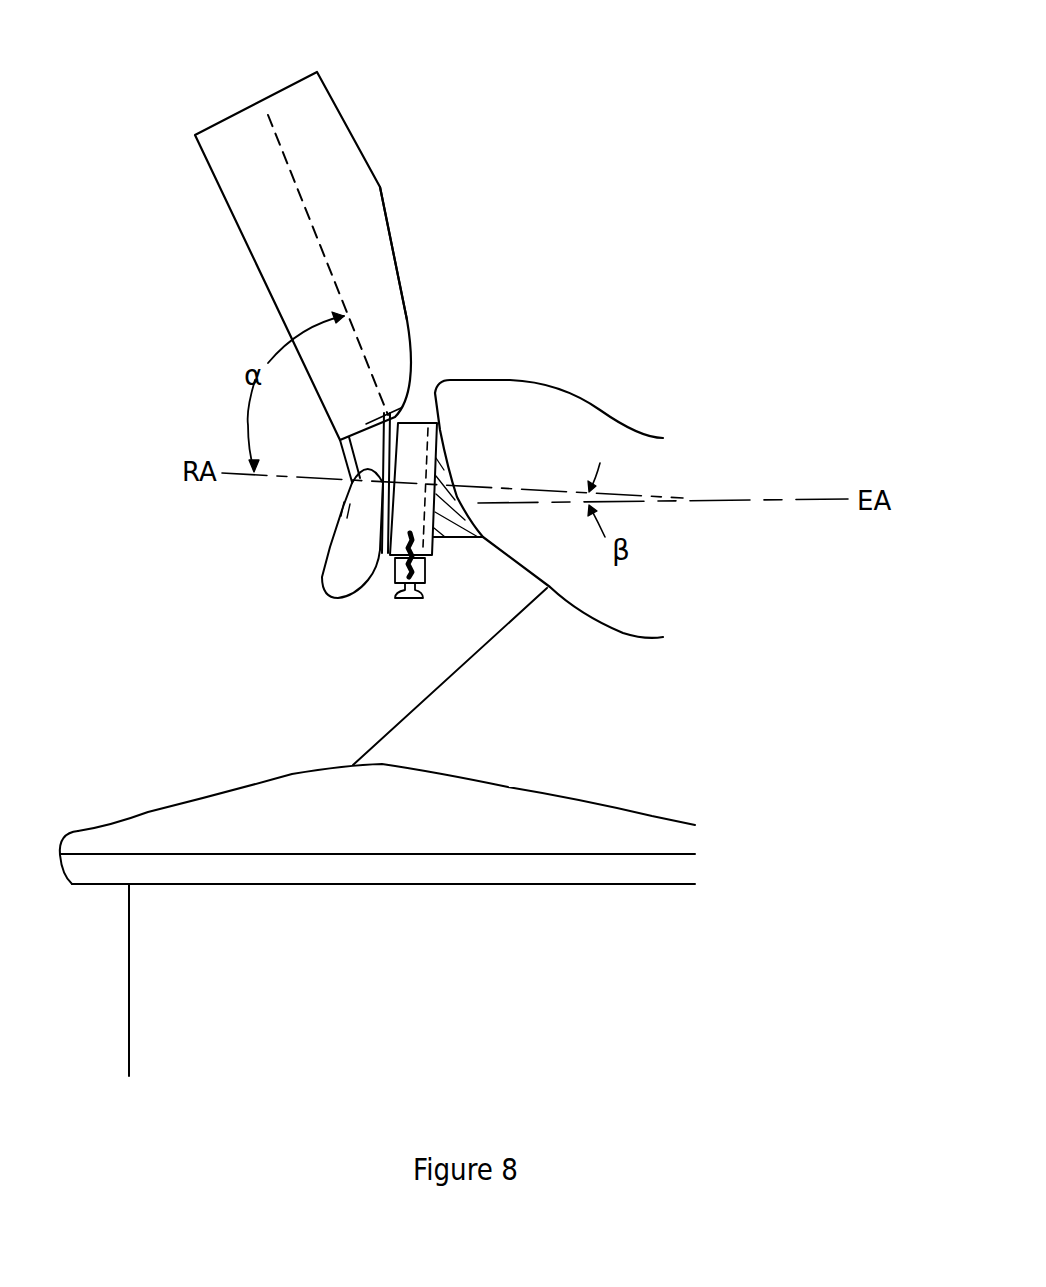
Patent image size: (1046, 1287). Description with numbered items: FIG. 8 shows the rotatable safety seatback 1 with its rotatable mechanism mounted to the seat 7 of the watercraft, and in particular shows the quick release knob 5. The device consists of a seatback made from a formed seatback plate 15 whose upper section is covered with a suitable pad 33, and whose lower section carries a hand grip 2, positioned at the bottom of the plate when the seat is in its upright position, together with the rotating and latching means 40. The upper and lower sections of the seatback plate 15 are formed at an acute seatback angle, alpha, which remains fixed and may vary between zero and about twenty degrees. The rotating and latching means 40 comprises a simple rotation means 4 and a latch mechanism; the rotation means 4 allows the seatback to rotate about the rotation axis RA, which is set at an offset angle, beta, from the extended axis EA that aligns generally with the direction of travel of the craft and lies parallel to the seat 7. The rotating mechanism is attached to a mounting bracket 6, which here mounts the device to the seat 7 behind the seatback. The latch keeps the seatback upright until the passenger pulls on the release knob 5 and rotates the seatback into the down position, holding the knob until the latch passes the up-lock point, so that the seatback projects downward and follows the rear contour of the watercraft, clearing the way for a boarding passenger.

The rotatable safety seatback 1 is at (192, 640).
The hand grip 2 is at (365, 559).
The rotation means 4 is at (413, 420).
The release knob 5 is at (387, 598).
The mounting bracket 6 is at (458, 540).
The seat 7 is at (508, 444).
The seatback plate 15 is at (338, 150).
The pad 33 is at (382, 188).
The rotating and latching means 40 is at (440, 614).